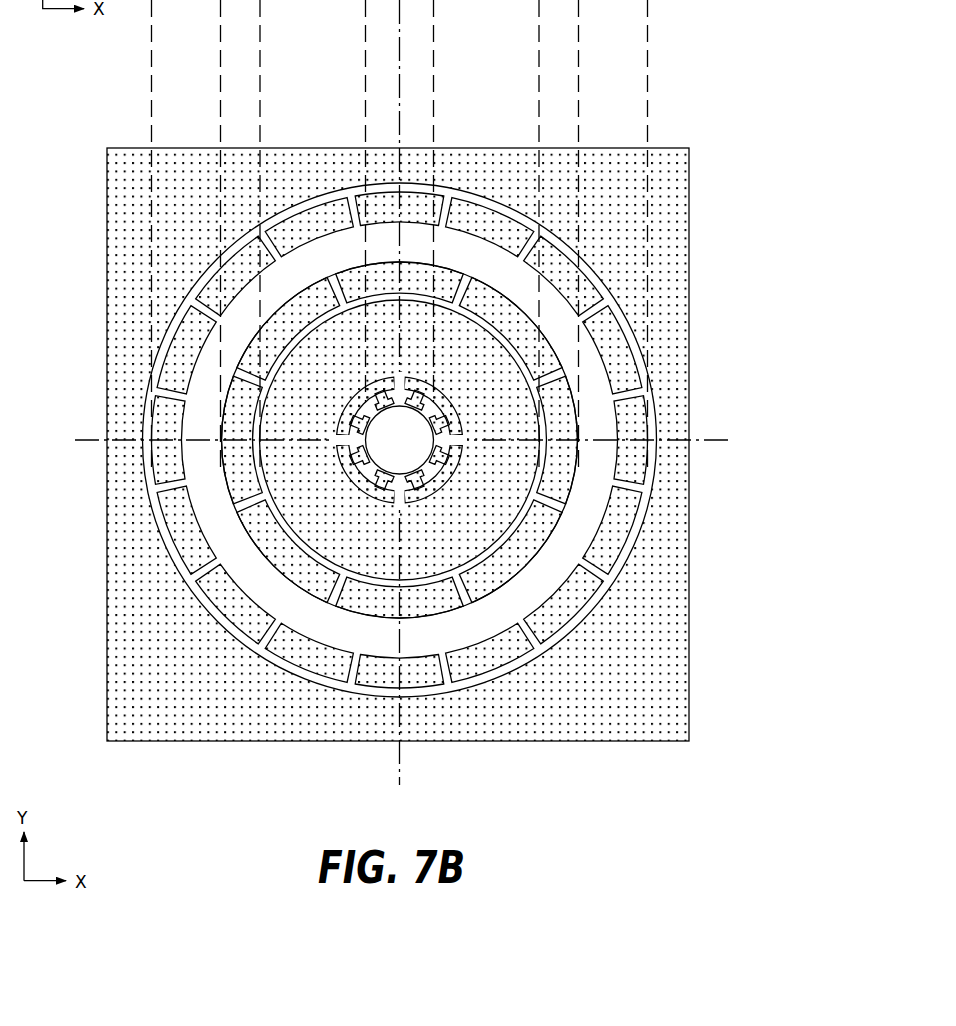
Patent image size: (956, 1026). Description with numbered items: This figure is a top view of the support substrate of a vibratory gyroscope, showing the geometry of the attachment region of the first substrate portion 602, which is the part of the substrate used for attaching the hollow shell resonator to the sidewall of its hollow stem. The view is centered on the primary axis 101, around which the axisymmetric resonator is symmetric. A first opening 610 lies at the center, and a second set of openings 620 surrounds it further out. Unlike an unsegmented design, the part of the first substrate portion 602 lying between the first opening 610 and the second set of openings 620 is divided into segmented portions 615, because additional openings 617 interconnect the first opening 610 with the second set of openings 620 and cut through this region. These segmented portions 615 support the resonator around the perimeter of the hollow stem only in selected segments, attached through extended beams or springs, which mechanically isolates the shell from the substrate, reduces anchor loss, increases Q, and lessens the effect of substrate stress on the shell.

The first substrate portion 602 is at (672, 75).
The additional openings 617 is at (421, 394).
The segmented portions 615 is at (427, 412).
The primary axis 101 is at (403, 439).
The first opening 610 is at (412, 455).
The second set of openings 620 is at (447, 472).